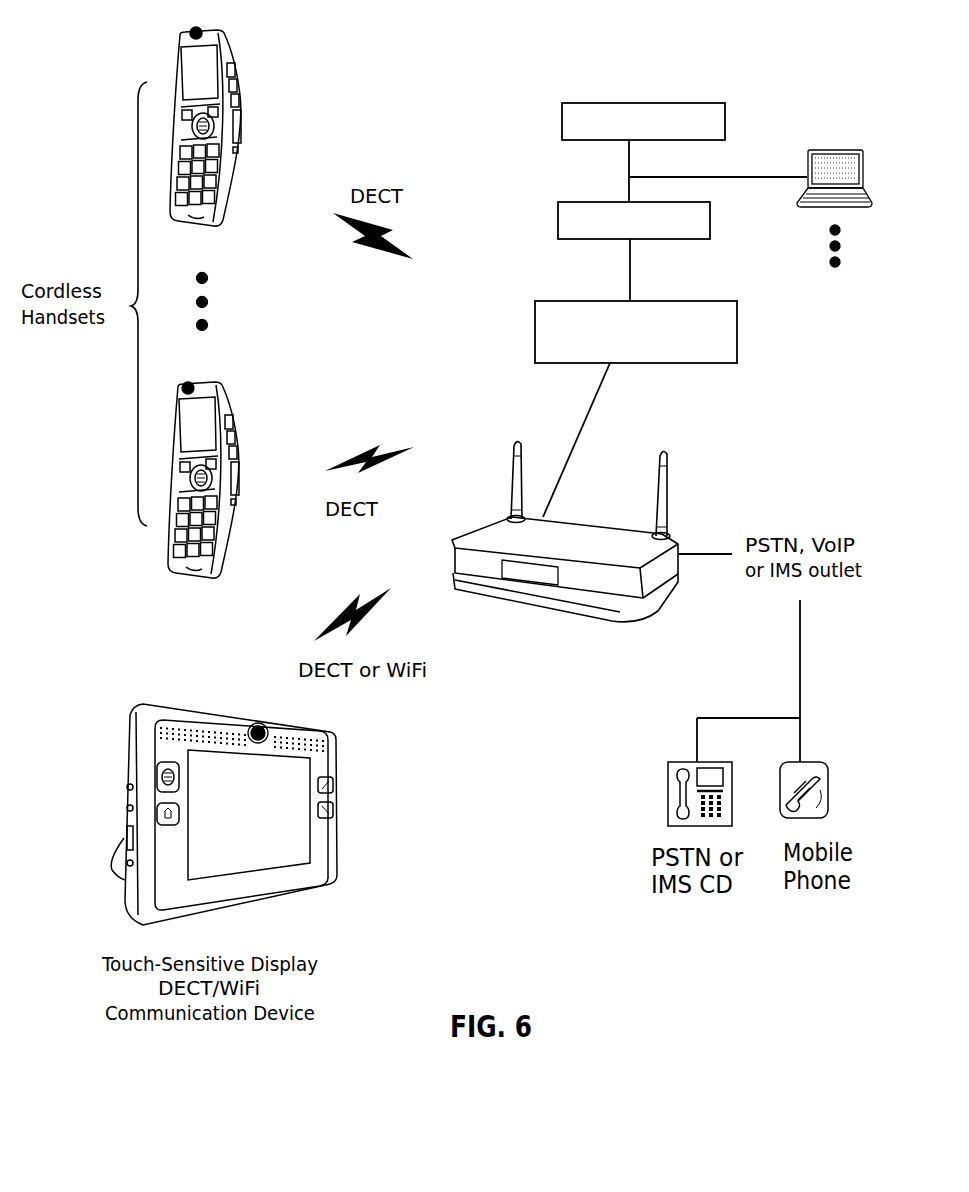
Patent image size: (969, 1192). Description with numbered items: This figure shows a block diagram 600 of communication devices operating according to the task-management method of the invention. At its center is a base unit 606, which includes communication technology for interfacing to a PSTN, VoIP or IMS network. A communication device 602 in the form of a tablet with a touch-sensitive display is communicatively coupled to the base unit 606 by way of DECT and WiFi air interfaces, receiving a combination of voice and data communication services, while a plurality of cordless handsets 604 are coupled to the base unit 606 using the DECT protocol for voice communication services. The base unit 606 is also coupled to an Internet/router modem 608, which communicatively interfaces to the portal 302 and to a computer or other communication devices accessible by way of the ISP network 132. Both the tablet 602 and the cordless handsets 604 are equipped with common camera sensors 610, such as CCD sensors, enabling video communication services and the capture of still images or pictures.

The block diagram 600 is at (493, 985).
The communication device 602 is at (145, 705).
The cordless handsets 604 is at (230, 407).
The base unit 606 is at (627, 620).
The Internet/router modem 608 is at (636, 332).
The camera sensors 610 is at (193, 385).
The ISP network 132 is at (634, 220).
The portal 302 is at (643, 121).